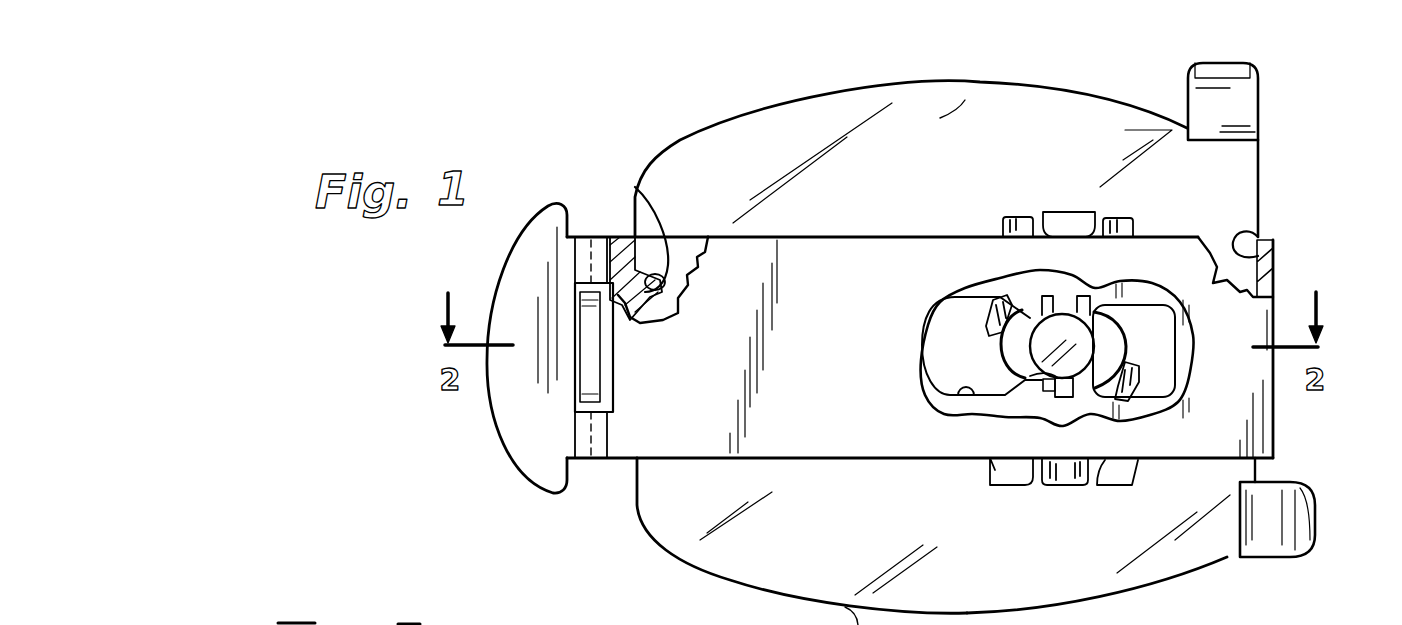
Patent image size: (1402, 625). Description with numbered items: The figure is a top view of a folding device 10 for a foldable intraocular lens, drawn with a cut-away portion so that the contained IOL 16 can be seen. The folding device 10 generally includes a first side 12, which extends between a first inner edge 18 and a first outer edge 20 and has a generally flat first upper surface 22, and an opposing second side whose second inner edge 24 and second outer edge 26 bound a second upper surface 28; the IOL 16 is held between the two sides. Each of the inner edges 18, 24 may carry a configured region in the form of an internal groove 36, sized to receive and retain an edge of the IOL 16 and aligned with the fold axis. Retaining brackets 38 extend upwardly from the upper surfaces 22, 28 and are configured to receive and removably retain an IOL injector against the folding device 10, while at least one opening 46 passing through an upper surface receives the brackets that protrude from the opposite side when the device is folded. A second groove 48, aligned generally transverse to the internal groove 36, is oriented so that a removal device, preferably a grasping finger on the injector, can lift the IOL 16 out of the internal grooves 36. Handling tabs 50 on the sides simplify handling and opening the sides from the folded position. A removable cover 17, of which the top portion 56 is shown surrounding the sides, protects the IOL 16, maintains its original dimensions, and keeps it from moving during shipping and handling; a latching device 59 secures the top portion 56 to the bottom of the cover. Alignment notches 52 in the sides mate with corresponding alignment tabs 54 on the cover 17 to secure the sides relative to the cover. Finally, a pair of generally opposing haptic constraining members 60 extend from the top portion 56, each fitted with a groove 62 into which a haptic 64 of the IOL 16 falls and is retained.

The folding device 10 is at (666, 105).
The first side 12 is at (810, 95).
The foldable IOL 16 is at (1180, 291).
The removable cover 17 is at (623, 450).
The first inner edge 18 is at (938, 303).
The first outer edge 20 is at (1121, 104).
The first upper surface 22 is at (965, 100).
The second inner edge 24 is at (962, 390).
The second outer edge 26 is at (1172, 573).
The second upper surface 28 is at (755, 555).
The internal groove 36 is at (1066, 296).
The retaining bracket 38 is at (1015, 217).
The opening 46 is at (1068, 212).
The second groove 48 is at (1040, 297).
The handling tab 50 is at (1262, 80).
The alignment notch 52 is at (665, 270).
The alignment tab 54 is at (613, 287).
The top portion 56 is at (757, 423).
The latching device 59 is at (577, 382).
The haptic constraining member 60 is at (988, 330).
The groove 62 is at (1030, 376).
The haptic 64 is at (1022, 345).